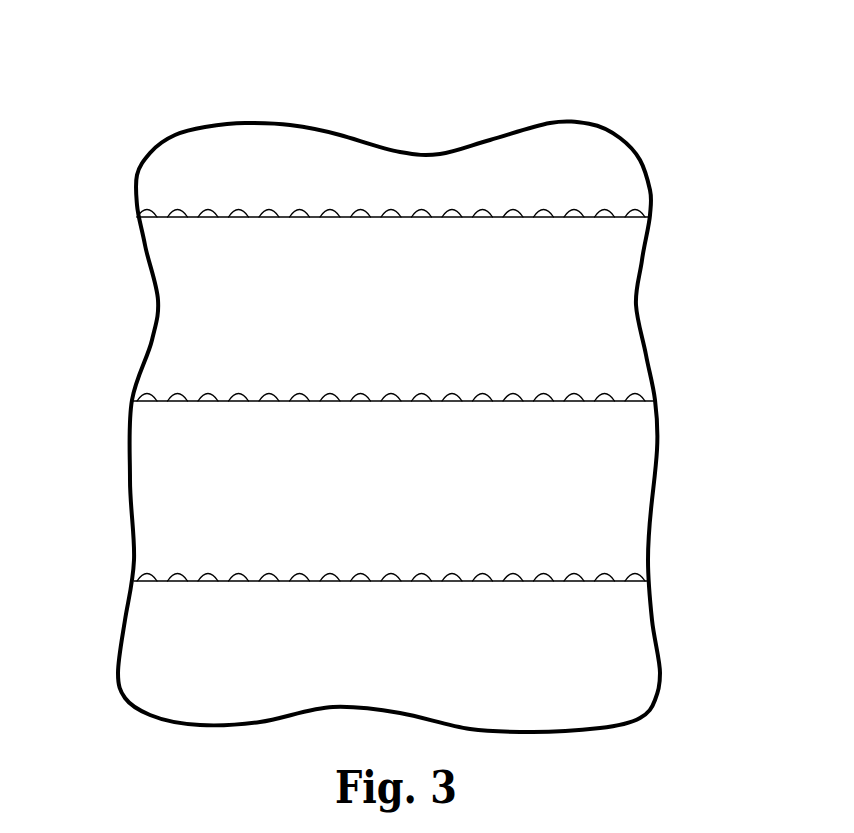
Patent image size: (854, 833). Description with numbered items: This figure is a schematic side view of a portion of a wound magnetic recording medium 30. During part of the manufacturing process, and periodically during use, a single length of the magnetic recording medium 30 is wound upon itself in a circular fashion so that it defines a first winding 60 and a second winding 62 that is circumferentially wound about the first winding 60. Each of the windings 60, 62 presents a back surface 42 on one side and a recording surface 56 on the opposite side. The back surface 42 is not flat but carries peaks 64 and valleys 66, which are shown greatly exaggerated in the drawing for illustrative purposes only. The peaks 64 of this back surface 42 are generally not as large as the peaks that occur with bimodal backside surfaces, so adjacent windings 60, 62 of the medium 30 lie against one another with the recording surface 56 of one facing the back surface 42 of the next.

The magnetic recording medium 30 is at (650, 61).
The recording surface 56 is at (636, 212).
The second winding 62 is at (631, 311).
The back surface 42 is at (606, 402).
The first winding 60 is at (620, 487).
The peaks 64 is at (163, 396).
The valleys 66 is at (177, 395).